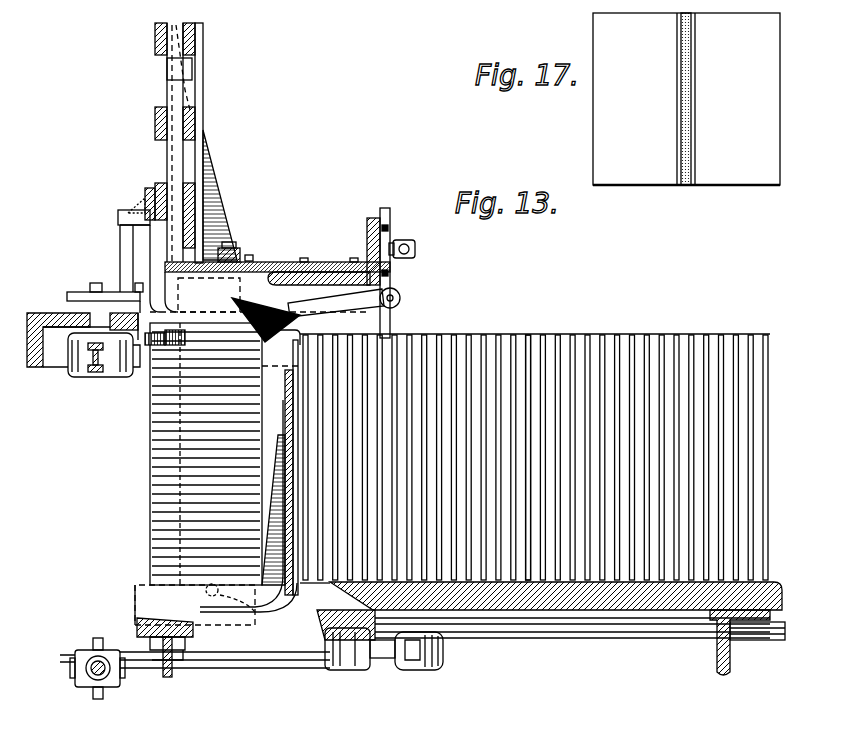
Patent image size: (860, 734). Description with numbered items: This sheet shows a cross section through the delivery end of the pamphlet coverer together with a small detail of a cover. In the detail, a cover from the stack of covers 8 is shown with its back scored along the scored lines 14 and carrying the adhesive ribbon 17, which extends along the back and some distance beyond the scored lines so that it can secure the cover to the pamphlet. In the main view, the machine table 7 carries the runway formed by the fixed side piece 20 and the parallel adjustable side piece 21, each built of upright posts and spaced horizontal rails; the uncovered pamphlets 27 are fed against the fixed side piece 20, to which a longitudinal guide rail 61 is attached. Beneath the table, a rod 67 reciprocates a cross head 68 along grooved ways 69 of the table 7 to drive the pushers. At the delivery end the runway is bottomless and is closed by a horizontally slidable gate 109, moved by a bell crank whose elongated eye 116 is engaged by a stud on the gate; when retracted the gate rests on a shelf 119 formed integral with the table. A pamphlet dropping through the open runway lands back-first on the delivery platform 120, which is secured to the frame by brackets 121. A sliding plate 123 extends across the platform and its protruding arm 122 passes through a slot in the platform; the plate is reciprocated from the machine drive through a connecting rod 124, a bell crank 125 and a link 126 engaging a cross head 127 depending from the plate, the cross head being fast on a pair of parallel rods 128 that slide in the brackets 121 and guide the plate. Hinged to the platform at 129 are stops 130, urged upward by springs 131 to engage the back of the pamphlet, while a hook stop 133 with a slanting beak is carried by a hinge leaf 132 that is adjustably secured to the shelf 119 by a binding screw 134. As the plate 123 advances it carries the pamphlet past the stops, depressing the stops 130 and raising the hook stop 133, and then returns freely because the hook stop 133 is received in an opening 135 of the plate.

In FIG. 13, the table 7 is at (45, 322).
In FIG. 13, the covers 8 is at (598, 335).
In FIG. 17, the covers 8 is at (752, 178).
In FIG. 17, the scored lines 14 is at (690, 67).
In FIG. 17, the adhesive ribbon 17 is at (695, 113).
In FIG. 13, the fixed side piece 20 is at (156, 112).
In FIG. 13, the adjustable side piece 21 is at (203, 48).
In FIG. 13, the uncovered pamphlets 27 is at (536, 335).
In FIG. 13, the longitudinal guide rail 61 is at (143, 193).
In FIG. 13, the rod 67 is at (95, 374).
In FIG. 13, the cross head 68 is at (120, 238).
In FIG. 13, the grooved ways 69 is at (100, 313).
In FIG. 13, the gate 109 is at (262, 262).
In FIG. 13, the elongated eye 116 is at (235, 247).
In FIG. 13, the shelf 119 is at (318, 275).
In FIG. 13, the delivery platform 120 is at (138, 600).
In FIG. 13, the brackets 121 is at (718, 672).
In FIG. 13, the protruding arm 122 is at (300, 635).
In FIG. 13, the sliding plate 123 is at (290, 415).
In FIG. 13, the connecting rod 124 is at (92, 682).
In FIG. 13, the bell crank 125 is at (205, 670).
In FIG. 13, the link 126 is at (390, 668).
In FIG. 13, the cross head 127 is at (325, 630).
In FIG. 13, the parallel rods 128 is at (567, 632).
In FIG. 13, the hinge 129 is at (212, 585).
In FIG. 13, the stops 130 is at (265, 583).
In FIG. 13, the springs 131 is at (245, 612).
In FIG. 13, the hinge leaf 132 is at (392, 290).
In FIG. 13, the hook stop 133 is at (312, 318).
In FIG. 13, the binding screw 134 is at (416, 250).
In FIG. 13, the opening 135 is at (285, 378).